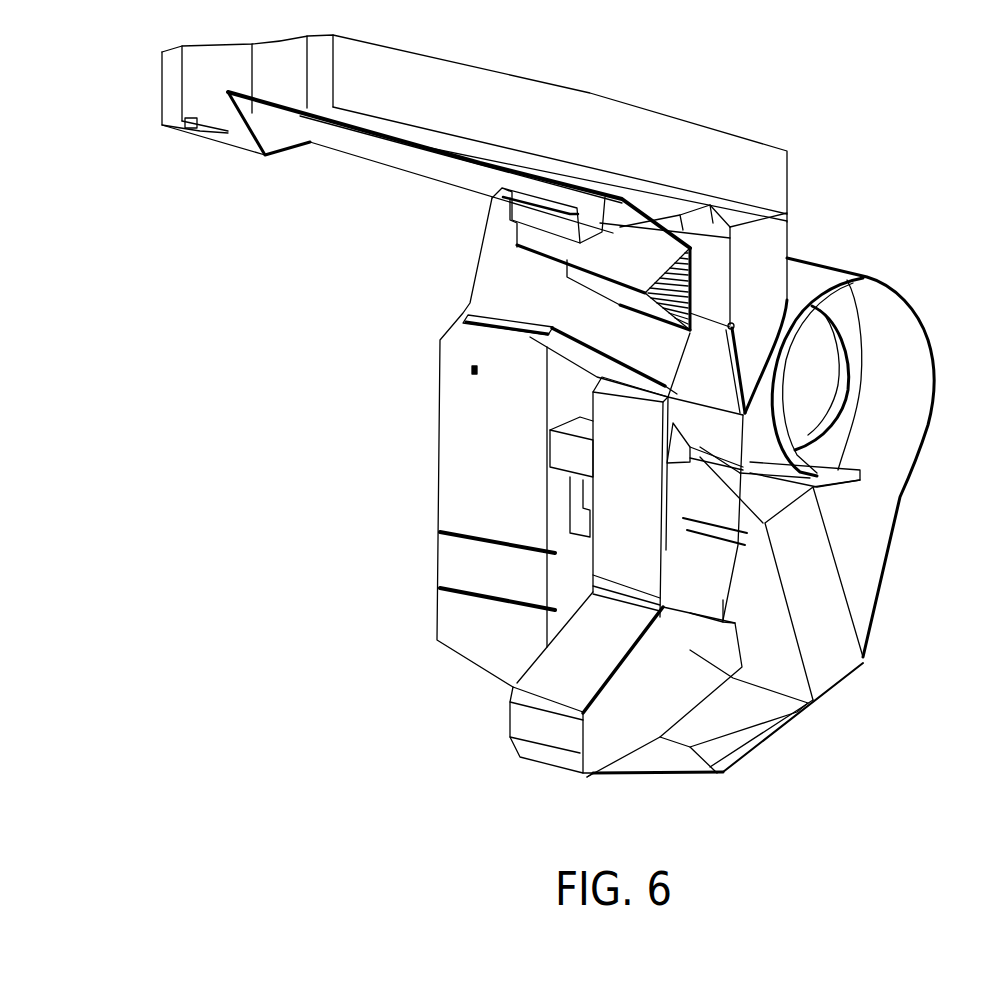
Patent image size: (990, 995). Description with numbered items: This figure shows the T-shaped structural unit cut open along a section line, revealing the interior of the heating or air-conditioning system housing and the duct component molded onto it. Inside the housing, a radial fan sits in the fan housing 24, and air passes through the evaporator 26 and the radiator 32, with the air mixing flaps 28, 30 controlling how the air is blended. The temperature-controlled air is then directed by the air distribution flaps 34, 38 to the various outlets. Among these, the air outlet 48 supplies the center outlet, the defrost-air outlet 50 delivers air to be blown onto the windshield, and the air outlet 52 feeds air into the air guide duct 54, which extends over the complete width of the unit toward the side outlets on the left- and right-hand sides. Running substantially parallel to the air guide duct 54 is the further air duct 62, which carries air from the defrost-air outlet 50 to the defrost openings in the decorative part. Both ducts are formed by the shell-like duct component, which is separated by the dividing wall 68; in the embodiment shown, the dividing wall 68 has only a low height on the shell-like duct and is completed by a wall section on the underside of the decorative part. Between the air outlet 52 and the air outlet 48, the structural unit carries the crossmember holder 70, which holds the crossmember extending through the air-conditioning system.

The fan housing 24 is at (900, 350).
The evaporator 26 is at (827, 665).
The air mixing flap 28 is at (720, 735).
The air mixing flap 30 is at (700, 573).
The radiator 32 is at (613, 737).
The air distribution flap 34 is at (673, 440).
The air distribution flap 38 is at (710, 373).
The air outlet 48 is at (493, 272).
The defrost-air outlet 50 is at (763, 247).
The air outlet 52 is at (714, 260).
The air guide duct 54 is at (218, 133).
The air duct 62 is at (500, 140).
The dividing wall 68 is at (193, 132).
The crossmember holder 70 is at (623, 267).